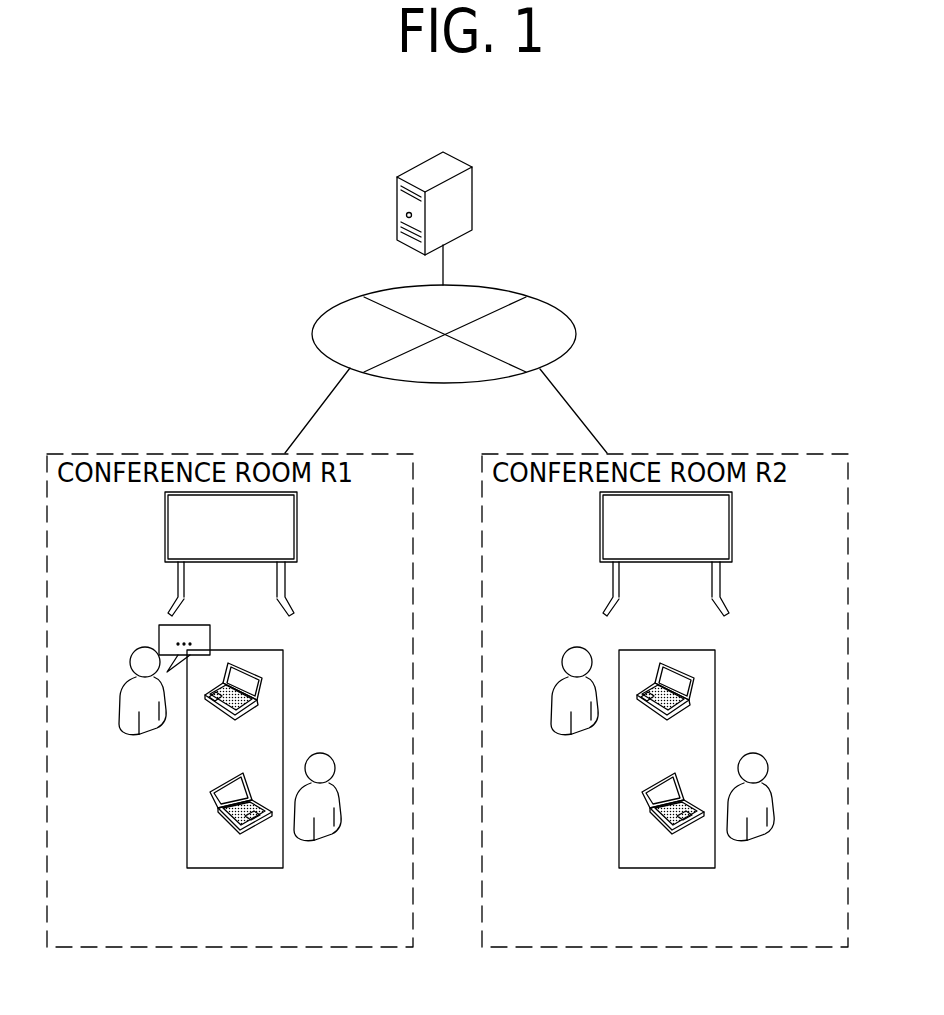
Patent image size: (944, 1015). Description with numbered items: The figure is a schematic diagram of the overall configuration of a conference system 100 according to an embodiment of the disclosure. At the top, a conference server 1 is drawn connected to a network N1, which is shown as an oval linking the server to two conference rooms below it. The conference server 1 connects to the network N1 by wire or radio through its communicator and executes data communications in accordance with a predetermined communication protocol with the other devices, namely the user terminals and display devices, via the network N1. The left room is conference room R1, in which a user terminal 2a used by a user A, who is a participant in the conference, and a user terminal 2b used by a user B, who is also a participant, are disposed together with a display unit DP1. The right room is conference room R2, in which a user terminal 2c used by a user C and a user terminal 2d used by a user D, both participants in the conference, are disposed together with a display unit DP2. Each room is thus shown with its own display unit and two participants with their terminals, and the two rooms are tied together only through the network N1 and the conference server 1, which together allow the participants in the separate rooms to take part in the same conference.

The conference server 1 is at (420, 163).
The conference system 100 is at (558, 158).
The network N1 is at (577, 337).
The display unit DP1 is at (297, 510).
The display unit DP2 is at (732, 510).
The user terminal 2a is at (242, 661).
The user terminal 2b is at (233, 777).
The user terminal 2c is at (674, 661).
The user terminal 2d is at (665, 777).
The user A is at (164, 678).
The user B is at (317, 784).
The user C is at (574, 678).
The user D is at (750, 784).